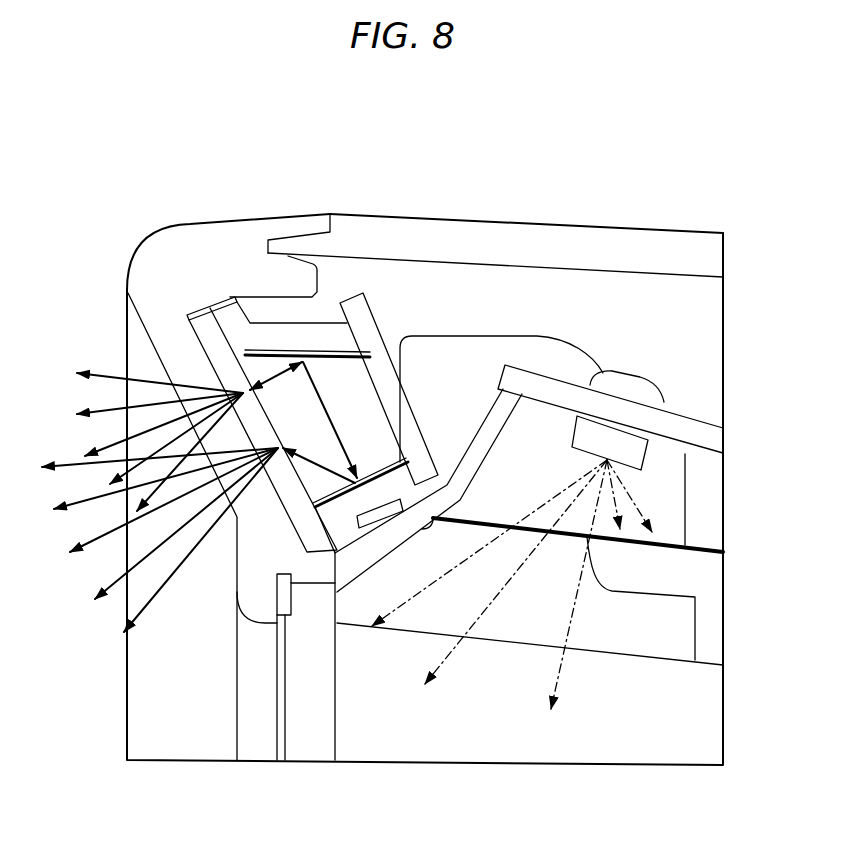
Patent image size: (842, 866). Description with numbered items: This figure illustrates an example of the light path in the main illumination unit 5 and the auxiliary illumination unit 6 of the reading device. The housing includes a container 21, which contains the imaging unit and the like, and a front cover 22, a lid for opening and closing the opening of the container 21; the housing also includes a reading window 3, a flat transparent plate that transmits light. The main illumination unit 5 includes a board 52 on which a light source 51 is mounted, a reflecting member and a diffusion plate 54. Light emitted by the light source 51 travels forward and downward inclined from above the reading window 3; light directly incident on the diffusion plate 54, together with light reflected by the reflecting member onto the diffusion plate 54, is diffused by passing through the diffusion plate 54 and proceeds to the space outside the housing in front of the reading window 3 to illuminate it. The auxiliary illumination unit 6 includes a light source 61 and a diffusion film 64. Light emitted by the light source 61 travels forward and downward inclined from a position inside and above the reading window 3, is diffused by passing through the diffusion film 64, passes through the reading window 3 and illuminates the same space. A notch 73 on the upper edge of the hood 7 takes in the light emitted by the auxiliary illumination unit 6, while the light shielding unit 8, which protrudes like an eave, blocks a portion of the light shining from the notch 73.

The main illumination unit 5 is at (228, 156).
The front cover 22 is at (190, 238).
The container 21 is at (672, 243).
The diffusion plate 54 is at (197, 335).
The board 52 is at (290, 510).
The reading window 3 is at (280, 712).
The light source 51 is at (368, 400).
The auxiliary illumination unit 6 is at (649, 362).
The light source 61 is at (633, 452).
The diffusion film 64 is at (498, 527).
The light shielding unit 8 is at (605, 562).
The hood 7 is at (632, 658).
The notch 73 is at (508, 632).